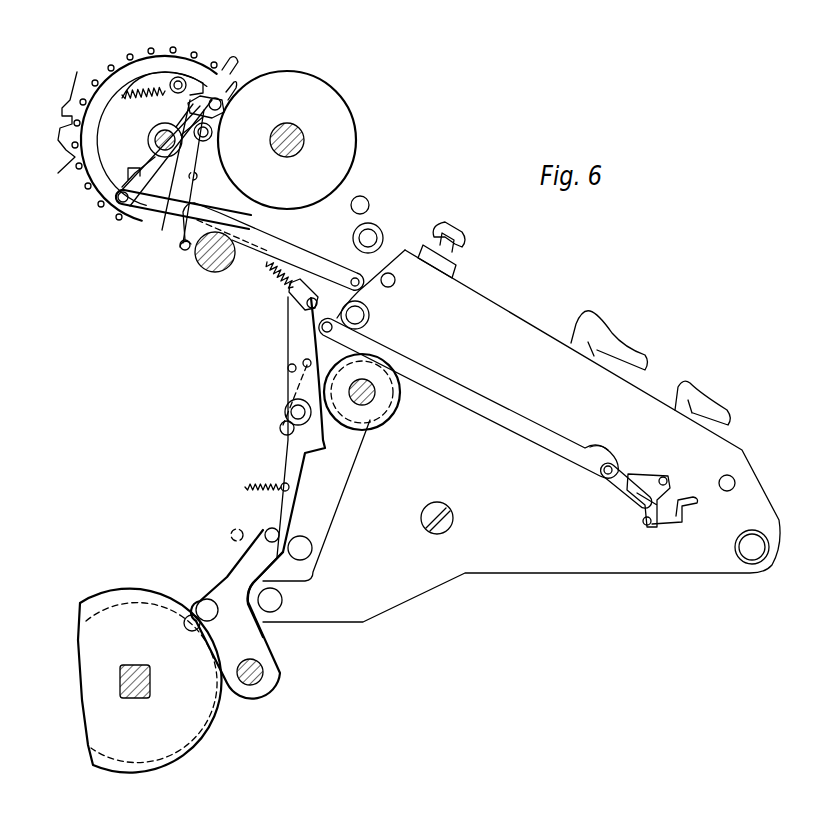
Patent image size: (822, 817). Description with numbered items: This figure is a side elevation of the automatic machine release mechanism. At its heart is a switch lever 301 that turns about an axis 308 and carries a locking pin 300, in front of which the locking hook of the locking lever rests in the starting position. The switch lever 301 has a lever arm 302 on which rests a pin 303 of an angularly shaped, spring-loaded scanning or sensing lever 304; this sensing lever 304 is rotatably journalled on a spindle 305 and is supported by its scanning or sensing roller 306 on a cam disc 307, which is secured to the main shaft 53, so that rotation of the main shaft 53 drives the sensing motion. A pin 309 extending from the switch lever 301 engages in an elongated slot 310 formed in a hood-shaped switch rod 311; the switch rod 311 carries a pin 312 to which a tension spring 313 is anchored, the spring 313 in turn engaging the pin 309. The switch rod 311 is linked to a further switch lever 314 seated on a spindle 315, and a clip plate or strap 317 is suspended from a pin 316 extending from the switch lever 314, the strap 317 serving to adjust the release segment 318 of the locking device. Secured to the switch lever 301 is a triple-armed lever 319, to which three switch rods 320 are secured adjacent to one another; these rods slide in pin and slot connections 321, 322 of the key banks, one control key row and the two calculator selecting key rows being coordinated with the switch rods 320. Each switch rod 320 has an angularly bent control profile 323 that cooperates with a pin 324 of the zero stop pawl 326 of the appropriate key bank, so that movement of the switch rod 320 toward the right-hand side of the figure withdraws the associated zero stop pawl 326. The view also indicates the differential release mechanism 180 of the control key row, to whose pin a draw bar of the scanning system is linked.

The main shaft 53 is at (135, 665).
The differential release mechanism 180 is at (452, 515).
The locking pin 300 is at (288, 368).
The switch lever 301 is at (287, 462).
The lever arm 302 is at (293, 530).
The pin 303 is at (267, 532).
The scanning or sensing lever 304 is at (227, 587).
The spindle 305 is at (263, 677).
The scanning or sensing roller 306 is at (198, 605).
The cam disc 307 is at (210, 722).
The axis 308 is at (285, 412).
The pin 309 is at (312, 298).
The elongated slot 310 is at (358, 278).
The switch rod 311 is at (230, 258).
The pin 312 is at (270, 290).
The tension spring 313 is at (295, 287).
The switch lever 314 is at (186, 252).
The spindle 315 is at (213, 132).
The pin 316 is at (150, 192).
The clip plate or strap 317 is at (180, 205).
The release segment 318 is at (133, 216).
The triple-armed lever 319 is at (320, 339).
The switch rods 320 is at (453, 397).
The pin and slot connection 321 is at (630, 493).
The pin and slot connection 322 is at (655, 525).
The control profile 323 is at (605, 456).
The pin 324 is at (604, 473).
The zero stop pawl 326 is at (645, 480).